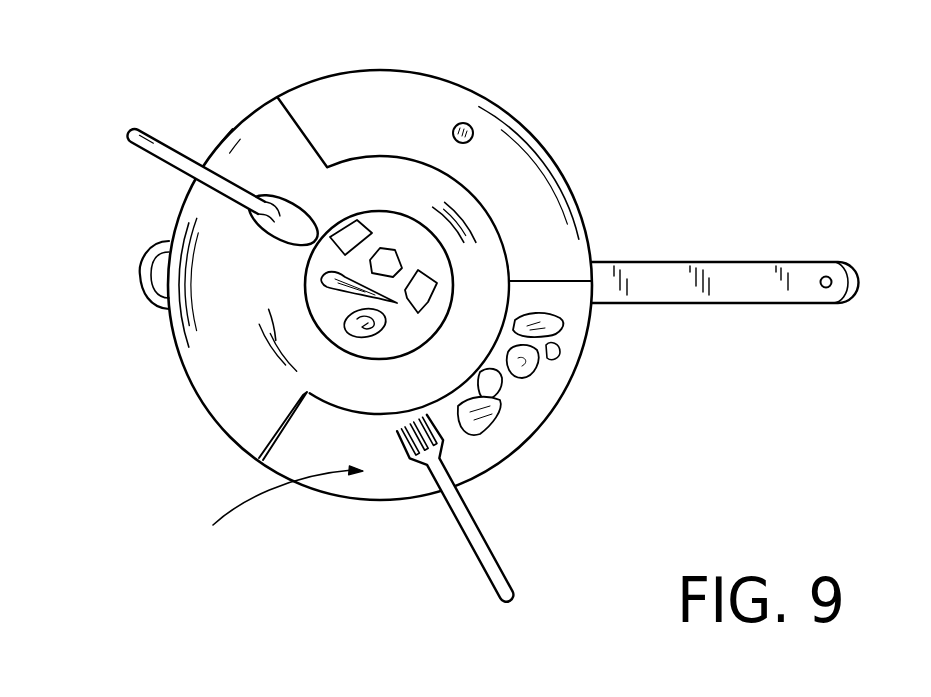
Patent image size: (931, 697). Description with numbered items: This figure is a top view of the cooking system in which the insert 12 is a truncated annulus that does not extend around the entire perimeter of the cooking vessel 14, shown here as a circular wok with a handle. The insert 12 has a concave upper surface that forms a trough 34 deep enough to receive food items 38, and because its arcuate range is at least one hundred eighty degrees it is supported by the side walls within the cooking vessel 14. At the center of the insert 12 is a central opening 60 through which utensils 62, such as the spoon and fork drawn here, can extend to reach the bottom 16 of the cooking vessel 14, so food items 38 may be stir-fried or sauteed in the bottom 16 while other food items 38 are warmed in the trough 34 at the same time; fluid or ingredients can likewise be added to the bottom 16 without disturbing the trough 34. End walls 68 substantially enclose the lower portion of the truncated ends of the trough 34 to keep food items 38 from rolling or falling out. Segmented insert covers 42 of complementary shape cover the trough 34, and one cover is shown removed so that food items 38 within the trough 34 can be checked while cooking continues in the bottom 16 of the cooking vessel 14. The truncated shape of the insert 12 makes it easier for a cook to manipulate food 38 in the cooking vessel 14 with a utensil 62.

The insert 12 is at (587, 334).
The cooking vessel 14 is at (230, 150).
The bottom 16 is at (393, 222).
The trough 34 is at (264, 511).
The food items 38 is at (337, 290).
The segmented insert covers 42 is at (573, 213).
The central opening 60 is at (473, 227).
The utensils 62 is at (129, 129).
The end walls 68 is at (278, 430).